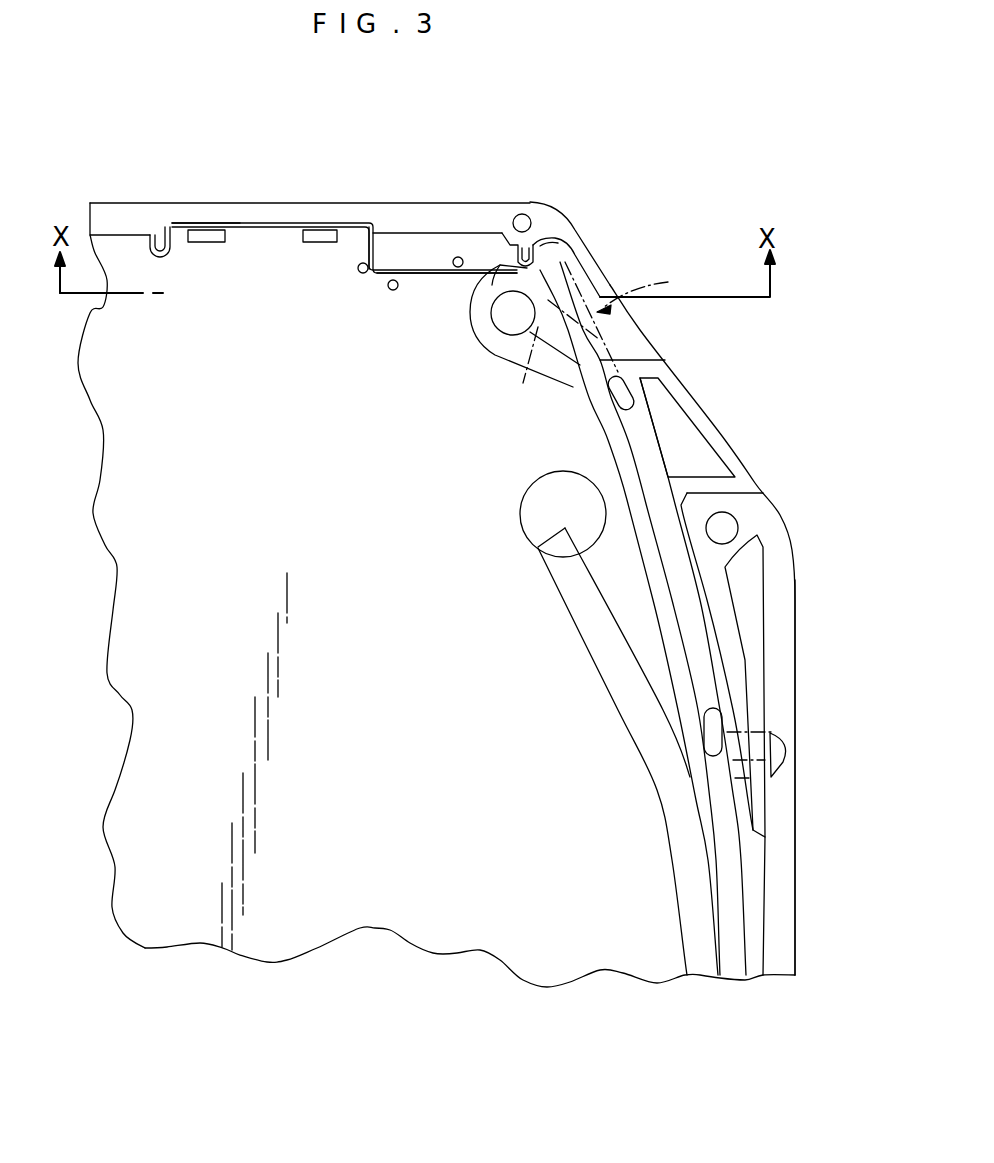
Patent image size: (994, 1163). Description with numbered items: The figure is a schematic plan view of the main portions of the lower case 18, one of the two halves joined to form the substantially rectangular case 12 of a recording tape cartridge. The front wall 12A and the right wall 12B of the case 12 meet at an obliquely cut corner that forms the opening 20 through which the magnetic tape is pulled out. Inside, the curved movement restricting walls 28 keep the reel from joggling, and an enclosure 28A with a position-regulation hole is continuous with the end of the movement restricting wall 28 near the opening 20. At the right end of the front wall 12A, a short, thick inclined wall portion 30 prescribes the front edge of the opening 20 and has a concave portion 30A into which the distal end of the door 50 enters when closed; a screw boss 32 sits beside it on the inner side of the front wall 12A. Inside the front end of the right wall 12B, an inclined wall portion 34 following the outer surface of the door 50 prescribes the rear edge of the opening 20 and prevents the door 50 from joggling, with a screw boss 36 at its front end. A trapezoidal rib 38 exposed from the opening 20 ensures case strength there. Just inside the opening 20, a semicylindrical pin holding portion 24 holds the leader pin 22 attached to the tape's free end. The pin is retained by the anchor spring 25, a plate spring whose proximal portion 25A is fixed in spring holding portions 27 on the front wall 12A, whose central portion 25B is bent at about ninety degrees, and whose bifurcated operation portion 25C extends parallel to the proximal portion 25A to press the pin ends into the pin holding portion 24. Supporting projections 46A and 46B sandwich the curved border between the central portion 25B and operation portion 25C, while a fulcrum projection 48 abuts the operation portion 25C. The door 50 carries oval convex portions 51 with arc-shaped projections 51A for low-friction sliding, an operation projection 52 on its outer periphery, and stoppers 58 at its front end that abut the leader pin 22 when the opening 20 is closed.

The case 12 is at (605, 90).
The front wall 12A is at (292, 203).
The right wall 12B is at (797, 876).
The lower case 18 is at (439, 204).
The opening 20 is at (683, 375).
The leader pin 22 is at (480, 340).
The pin holding portions 24 is at (497, 320).
The anchor spring 25 is at (383, 280).
The proximal portion 25A is at (234, 222).
The central portion 25B is at (365, 222).
The operation portion 25C is at (430, 276).
The spring holding portions 27 is at (220, 243).
The movement restricting walls 28 is at (625, 660).
The enclosure 28A is at (560, 519).
The inclined wall portions 30 is at (558, 212).
The concave portion 30A is at (560, 250).
The screw bosses 32 is at (523, 213).
The inclined wall portions 34 is at (730, 645).
The screw bosses 36 is at (724, 526).
The ribs 38 is at (727, 453).
The supporting projection 46A is at (357, 268).
The supporting projection 46B is at (390, 291).
The fulcrum projection 48 is at (458, 256).
The door 50 is at (653, 287).
The convex portions 51 is at (705, 727).
The projections 51A is at (608, 400).
The operation projection 52 is at (785, 746).
The stoppers 58 is at (537, 360).